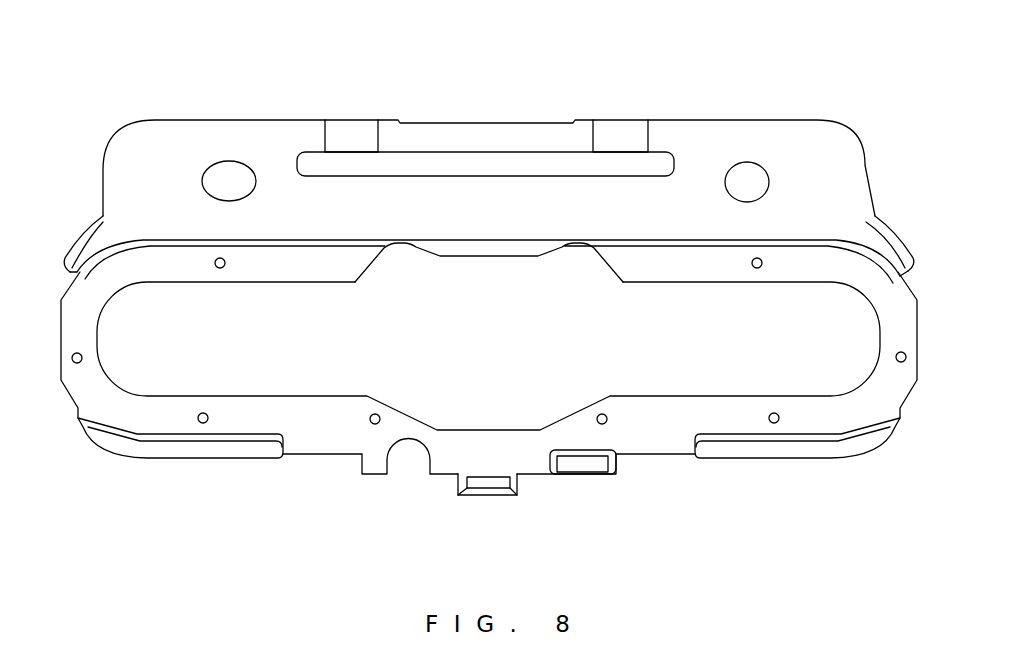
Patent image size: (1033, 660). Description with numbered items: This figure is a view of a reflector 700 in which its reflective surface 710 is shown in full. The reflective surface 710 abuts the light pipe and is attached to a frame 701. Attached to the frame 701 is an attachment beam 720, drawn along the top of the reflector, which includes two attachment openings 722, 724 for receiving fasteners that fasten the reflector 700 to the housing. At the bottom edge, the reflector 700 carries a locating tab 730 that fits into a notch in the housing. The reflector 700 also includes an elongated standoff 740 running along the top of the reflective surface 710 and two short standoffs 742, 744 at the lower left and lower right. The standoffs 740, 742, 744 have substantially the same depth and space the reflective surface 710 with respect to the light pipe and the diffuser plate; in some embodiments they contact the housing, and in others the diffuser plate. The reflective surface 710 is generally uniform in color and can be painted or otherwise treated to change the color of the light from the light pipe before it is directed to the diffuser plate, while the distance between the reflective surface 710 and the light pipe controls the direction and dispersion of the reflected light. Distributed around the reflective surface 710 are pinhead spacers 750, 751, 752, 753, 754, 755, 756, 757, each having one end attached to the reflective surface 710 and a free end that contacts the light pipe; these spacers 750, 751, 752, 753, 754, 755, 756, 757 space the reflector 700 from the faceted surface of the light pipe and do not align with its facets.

The reflector 700 is at (100, 130).
The frame 701 is at (68, 273).
The reflective surface 710 is at (893, 387).
The attachment beam 720 is at (813, 147).
The attachment opening 722 is at (216, 166).
The attachment opening 724 is at (766, 166).
The locating tab 730 is at (500, 489).
The elongated standoff 740 is at (880, 245).
The short standoff 742 is at (140, 447).
The short standoff 744 is at (838, 448).
The pinhead spacer 750 is at (224, 268).
The pinhead spacer 751 is at (75, 363).
The pinhead spacer 752 is at (205, 423).
The pinhead spacer 753 is at (372, 424).
The pinhead spacer 754 is at (605, 424).
The pinhead spacer 755 is at (772, 423).
The pinhead spacer 756 is at (897, 354).
The pinhead spacer 757 is at (753, 267).